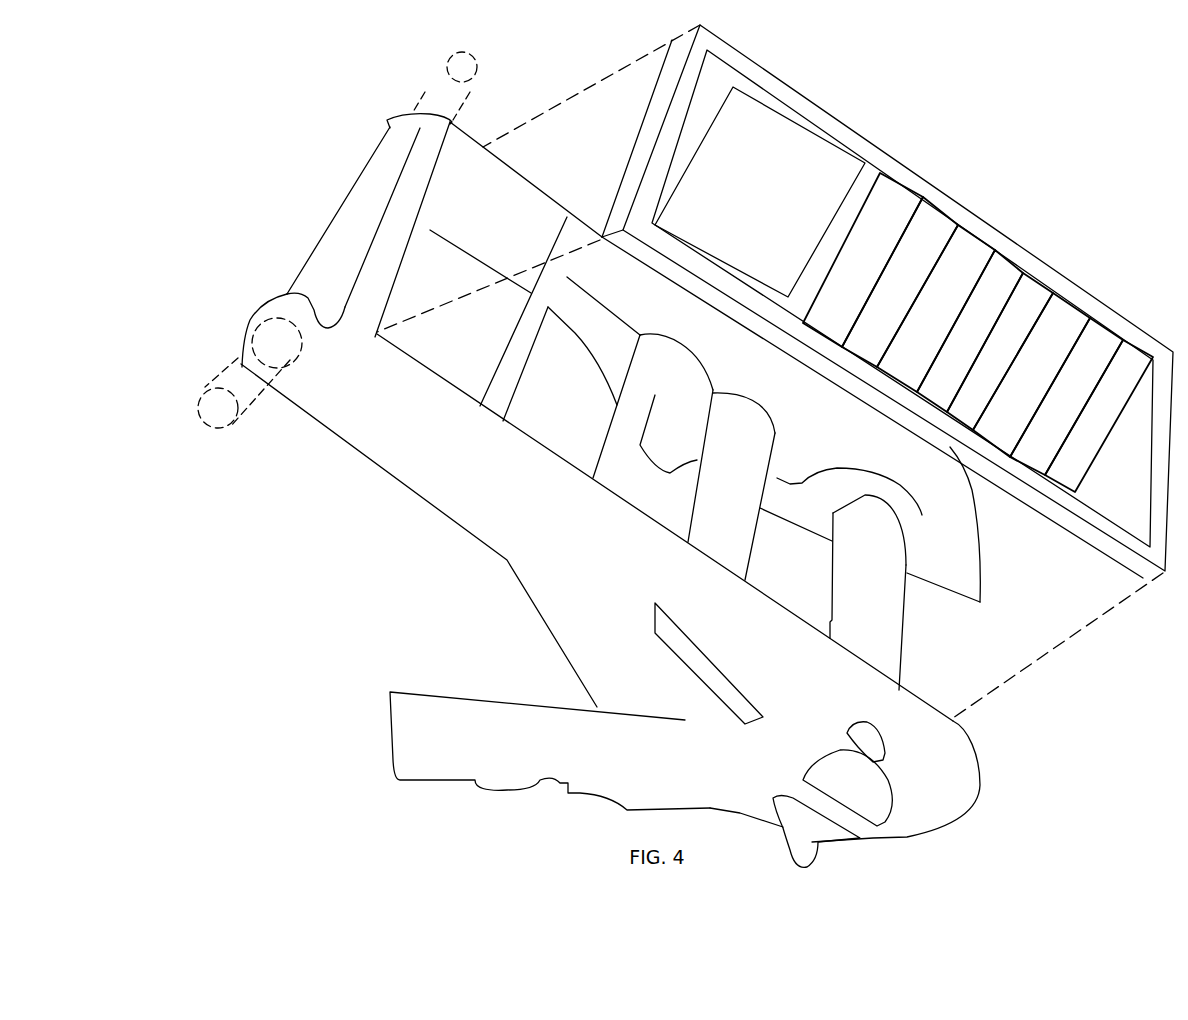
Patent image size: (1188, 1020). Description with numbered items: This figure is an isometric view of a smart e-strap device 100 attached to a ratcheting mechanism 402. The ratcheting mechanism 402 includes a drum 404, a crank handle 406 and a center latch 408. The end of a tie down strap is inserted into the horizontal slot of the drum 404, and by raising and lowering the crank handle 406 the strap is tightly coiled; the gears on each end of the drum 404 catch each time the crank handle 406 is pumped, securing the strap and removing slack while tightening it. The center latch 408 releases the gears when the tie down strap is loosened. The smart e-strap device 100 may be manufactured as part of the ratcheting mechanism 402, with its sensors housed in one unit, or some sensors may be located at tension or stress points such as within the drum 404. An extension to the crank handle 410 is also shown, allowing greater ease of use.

The smart e-strap device 100 is at (1033, 253).
The ratcheting mechanism 402 is at (478, 540).
The drum 404 is at (865, 595).
The crank handle 406 is at (390, 176).
The center latch 408 is at (497, 360).
The extension to the crank handle 410 is at (440, 63).